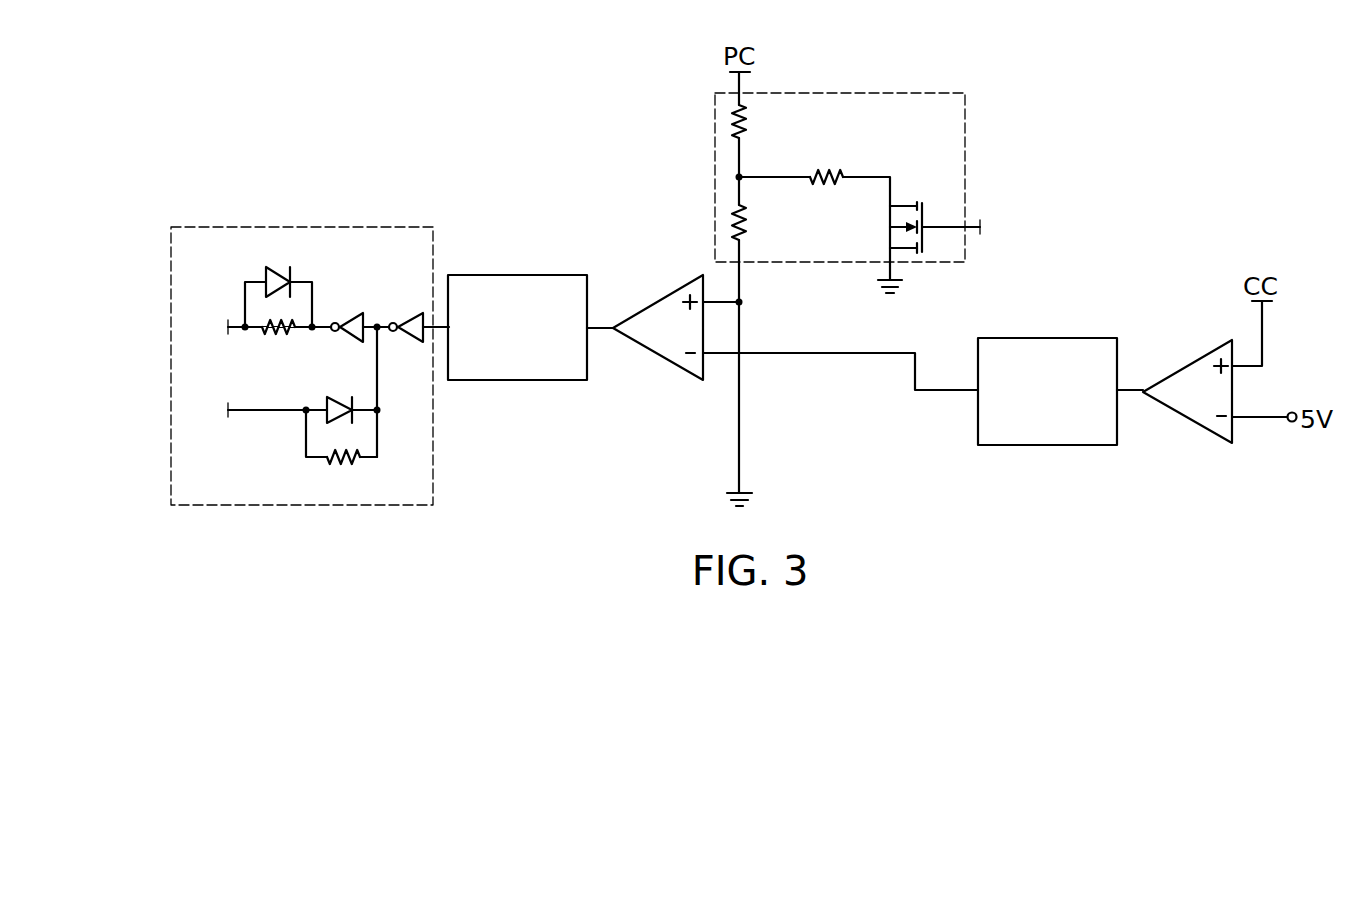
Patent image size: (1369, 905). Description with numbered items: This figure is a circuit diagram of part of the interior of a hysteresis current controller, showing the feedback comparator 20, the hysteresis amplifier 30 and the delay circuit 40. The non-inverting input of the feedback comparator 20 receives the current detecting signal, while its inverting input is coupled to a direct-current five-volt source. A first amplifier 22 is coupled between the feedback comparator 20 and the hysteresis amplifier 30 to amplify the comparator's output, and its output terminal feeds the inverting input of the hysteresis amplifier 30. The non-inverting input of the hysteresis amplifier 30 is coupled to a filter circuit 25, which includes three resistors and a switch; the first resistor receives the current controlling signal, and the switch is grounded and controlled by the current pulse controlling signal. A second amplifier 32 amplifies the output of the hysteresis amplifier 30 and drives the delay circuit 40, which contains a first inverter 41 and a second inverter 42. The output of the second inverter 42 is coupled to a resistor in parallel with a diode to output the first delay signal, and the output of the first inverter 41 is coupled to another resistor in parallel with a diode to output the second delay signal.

The feedback comparator 20 is at (1187, 363).
The first amplifier 22 is at (1047, 445).
The filter circuit 25 is at (965, 123).
The hysteresis amplifier 30 is at (658, 298).
The second amplifier 32 is at (517, 382).
The delay circuit 40 is at (219, 227).
The first inverter 41 is at (408, 316).
The second inverter 42 is at (349, 316).